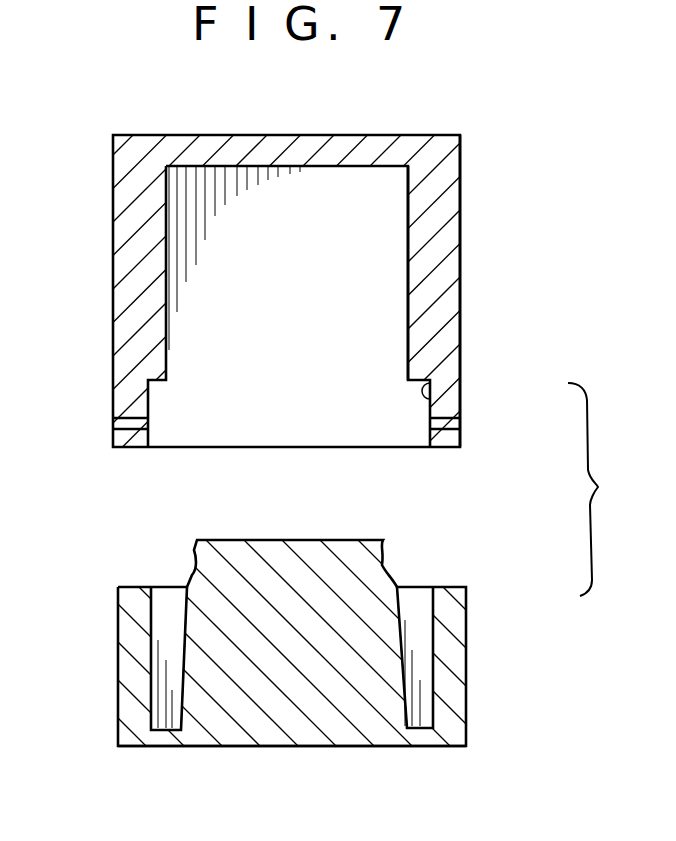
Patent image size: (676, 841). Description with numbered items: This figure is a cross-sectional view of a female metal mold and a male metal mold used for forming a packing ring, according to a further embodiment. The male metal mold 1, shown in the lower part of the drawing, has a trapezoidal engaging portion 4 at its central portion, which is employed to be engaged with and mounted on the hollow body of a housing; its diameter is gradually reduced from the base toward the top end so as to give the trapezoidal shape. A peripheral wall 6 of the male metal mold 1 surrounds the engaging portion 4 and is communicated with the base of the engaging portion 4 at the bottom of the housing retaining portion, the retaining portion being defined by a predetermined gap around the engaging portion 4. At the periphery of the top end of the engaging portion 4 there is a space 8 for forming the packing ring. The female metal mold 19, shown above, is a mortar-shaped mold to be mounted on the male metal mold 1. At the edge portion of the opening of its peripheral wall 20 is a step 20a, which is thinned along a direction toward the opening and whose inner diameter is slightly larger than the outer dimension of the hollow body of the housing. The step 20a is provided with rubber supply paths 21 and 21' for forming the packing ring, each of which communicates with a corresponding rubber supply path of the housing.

The female metal mold 19 is at (362, 130).
The peripheral wall 20 is at (460, 275).
The step 20a is at (428, 380).
The rubber supply path 21 is at (486, 404).
The rubber supply path 21' is at (92, 408).
The space for forming a packing ring 8 is at (388, 558).
The engaging portion 4 is at (405, 623).
The peripheral wall 6 is at (466, 648).
The male metal mold 1 is at (349, 747).